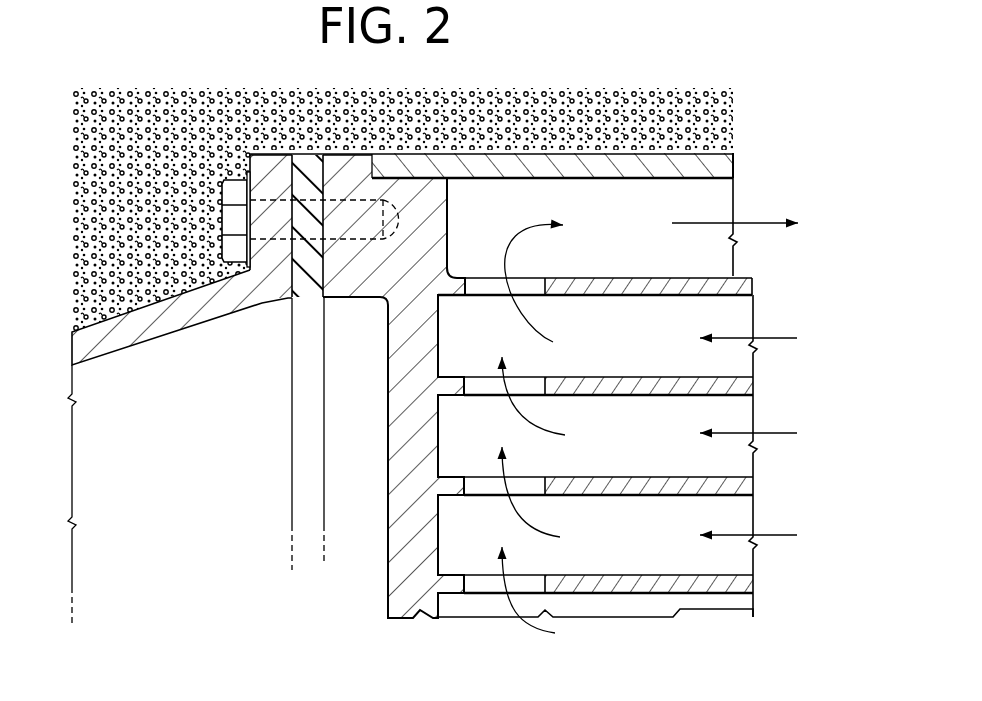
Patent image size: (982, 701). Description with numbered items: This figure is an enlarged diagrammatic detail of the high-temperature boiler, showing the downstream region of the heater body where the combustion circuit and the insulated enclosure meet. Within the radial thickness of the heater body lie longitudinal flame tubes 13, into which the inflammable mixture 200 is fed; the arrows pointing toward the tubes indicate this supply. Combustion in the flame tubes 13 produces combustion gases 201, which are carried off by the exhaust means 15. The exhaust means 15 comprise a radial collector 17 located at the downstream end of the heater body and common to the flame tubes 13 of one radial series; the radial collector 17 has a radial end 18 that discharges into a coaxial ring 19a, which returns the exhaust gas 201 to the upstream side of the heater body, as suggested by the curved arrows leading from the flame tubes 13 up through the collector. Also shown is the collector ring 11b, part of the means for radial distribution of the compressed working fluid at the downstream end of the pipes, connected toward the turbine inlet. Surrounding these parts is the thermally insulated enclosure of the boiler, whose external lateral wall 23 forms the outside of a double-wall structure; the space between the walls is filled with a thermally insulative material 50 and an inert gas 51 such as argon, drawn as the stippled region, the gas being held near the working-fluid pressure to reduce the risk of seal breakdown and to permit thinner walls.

The collector ring 11b is at (198, 478).
The flame tube 13 is at (742, 417).
The exhaust means 15 is at (544, 214).
The radial collector 17 is at (477, 533).
The radial end 18 is at (488, 287).
The coaxial ring 19a is at (717, 202).
The external lateral wall 23 is at (738, 125).
The thermally insulative material 50 is at (402, 181).
The inert gas 51 is at (598, 105).
The inflammable mixture 200 is at (779, 300).
The combustion gases 201 is at (775, 260).